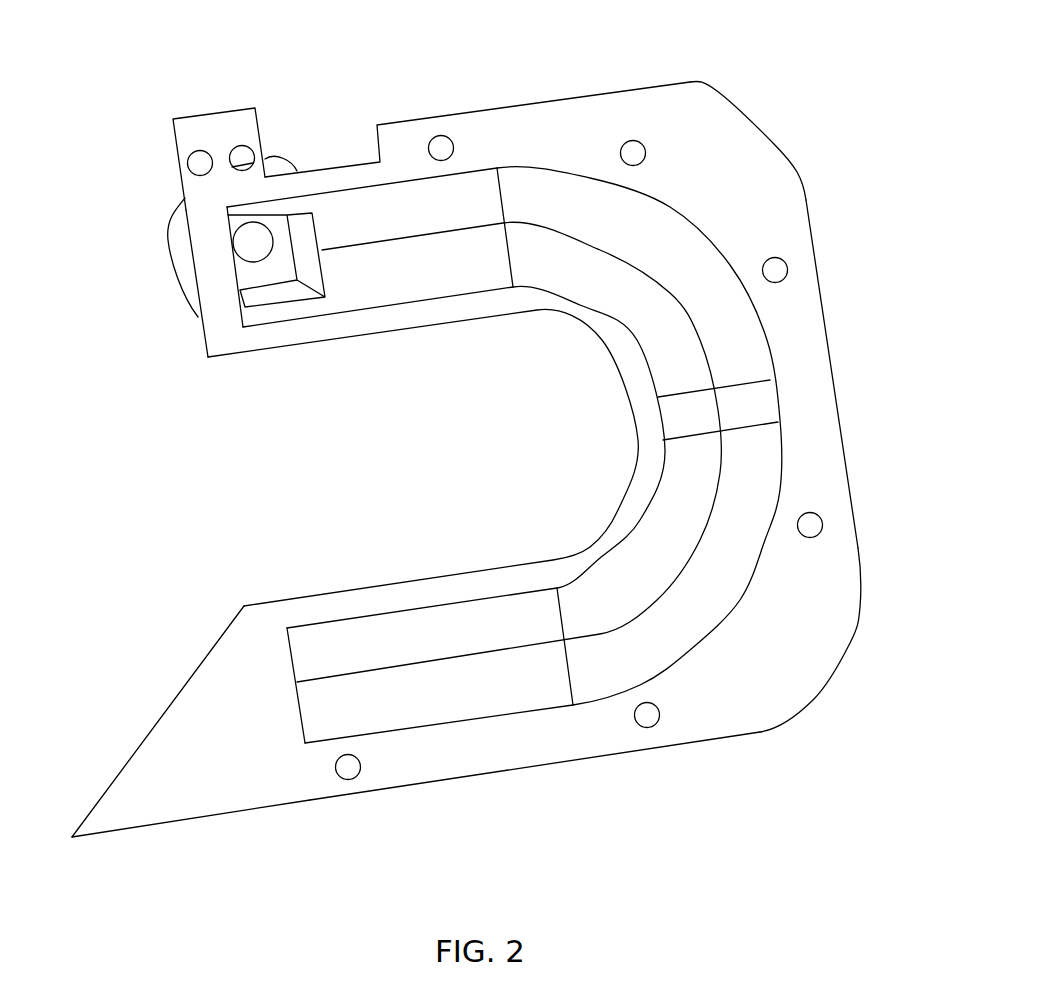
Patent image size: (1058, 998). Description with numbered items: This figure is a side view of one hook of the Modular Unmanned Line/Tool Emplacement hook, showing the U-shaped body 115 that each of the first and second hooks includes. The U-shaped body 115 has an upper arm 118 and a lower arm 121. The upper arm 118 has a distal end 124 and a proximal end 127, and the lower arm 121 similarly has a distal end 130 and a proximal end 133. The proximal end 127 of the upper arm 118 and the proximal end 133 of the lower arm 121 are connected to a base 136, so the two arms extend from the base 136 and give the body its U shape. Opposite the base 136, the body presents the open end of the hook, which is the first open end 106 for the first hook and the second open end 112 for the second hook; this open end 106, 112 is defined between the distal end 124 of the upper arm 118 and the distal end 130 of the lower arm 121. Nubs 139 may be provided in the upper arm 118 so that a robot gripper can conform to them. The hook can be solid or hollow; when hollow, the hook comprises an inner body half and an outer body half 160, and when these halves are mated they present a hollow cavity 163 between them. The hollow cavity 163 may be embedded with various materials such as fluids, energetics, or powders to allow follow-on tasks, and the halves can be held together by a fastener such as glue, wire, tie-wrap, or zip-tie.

The first open end 106 is at (487, 464).
The second open end 112 is at (508, 464).
The U-shaped body 115 is at (508, 464).
The upper arm 118 is at (523, 123).
The lower arm 121 is at (493, 763).
The distal end 124 is at (207, 215).
The proximal end 127 is at (713, 122).
The distal end 130 is at (153, 807).
The proximal end 133 is at (790, 693).
The base 136 is at (830, 450).
The nubs 139 is at (220, 128).
The outer body half 160 is at (200, 688).
The hollow cavity 163 is at (738, 533).